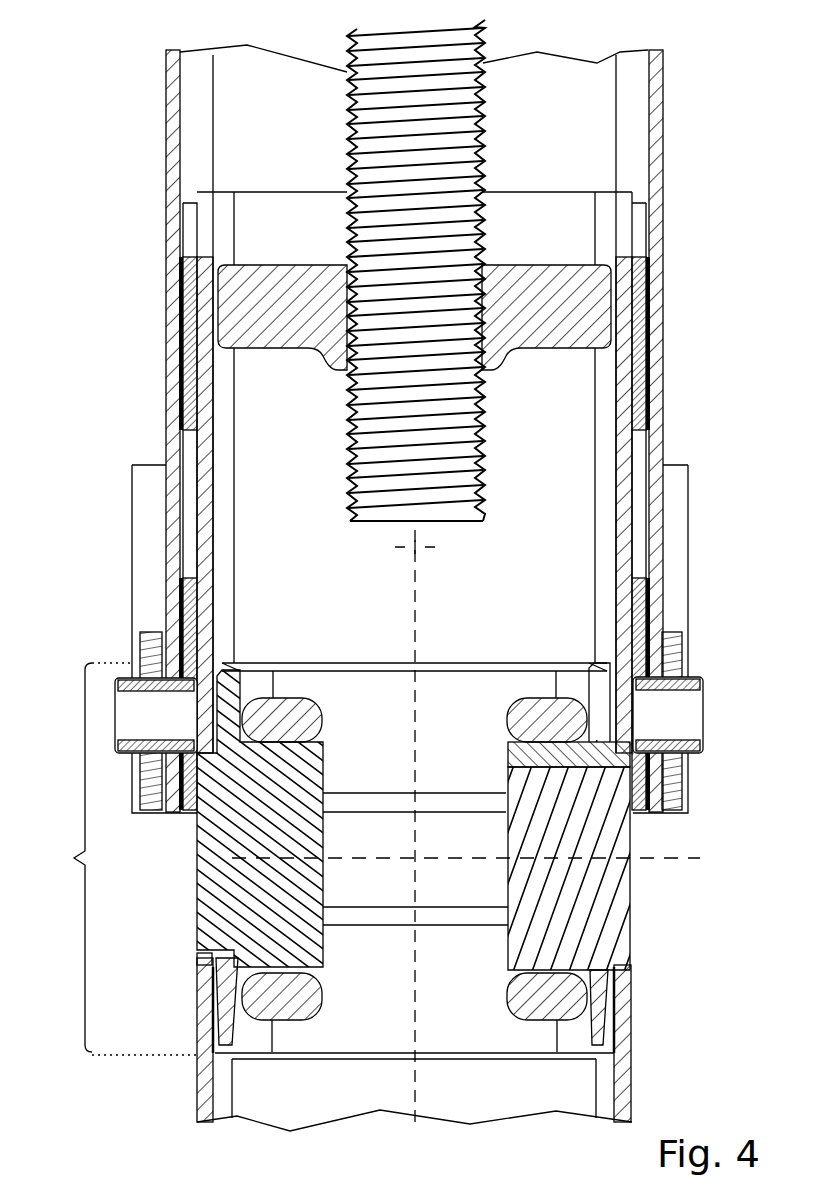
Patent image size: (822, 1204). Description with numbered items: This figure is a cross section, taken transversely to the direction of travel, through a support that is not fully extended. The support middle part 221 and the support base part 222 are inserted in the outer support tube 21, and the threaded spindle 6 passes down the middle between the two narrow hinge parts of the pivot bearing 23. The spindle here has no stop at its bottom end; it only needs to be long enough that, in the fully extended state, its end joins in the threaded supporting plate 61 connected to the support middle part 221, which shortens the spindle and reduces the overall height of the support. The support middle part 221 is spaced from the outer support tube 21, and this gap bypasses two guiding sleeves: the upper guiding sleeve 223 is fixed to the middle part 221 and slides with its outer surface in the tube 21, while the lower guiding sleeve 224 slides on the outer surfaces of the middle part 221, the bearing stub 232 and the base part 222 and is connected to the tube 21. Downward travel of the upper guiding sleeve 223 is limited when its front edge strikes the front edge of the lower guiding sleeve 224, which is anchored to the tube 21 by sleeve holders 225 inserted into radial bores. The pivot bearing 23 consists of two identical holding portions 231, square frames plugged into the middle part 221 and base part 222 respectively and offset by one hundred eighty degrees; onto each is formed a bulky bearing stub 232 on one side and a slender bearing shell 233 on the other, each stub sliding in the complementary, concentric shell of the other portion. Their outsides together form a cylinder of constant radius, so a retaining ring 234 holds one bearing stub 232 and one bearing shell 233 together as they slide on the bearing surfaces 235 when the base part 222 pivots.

The threaded spindle 6 is at (461, 266).
The threaded supporting plate 61 is at (414, 286).
The outer support tube 21 is at (425, 431).
The support middle part 221 is at (427, 329).
The support base part 222 is at (427, 1040).
The upper guiding sleeve 223 is at (423, 505).
The lower guiding sleeve 224 is at (416, 685).
The sleeve holder 225 is at (394, 721).
The pivot bearing 23 is at (111, 859).
The holding portion 231 is at (399, 1007).
The bearing stub 232 is at (427, 844).
The bearing shell 233 is at (370, 868).
The retaining ring 234 is at (414, 857).
The bearing surfaces 235 is at (328, 742).